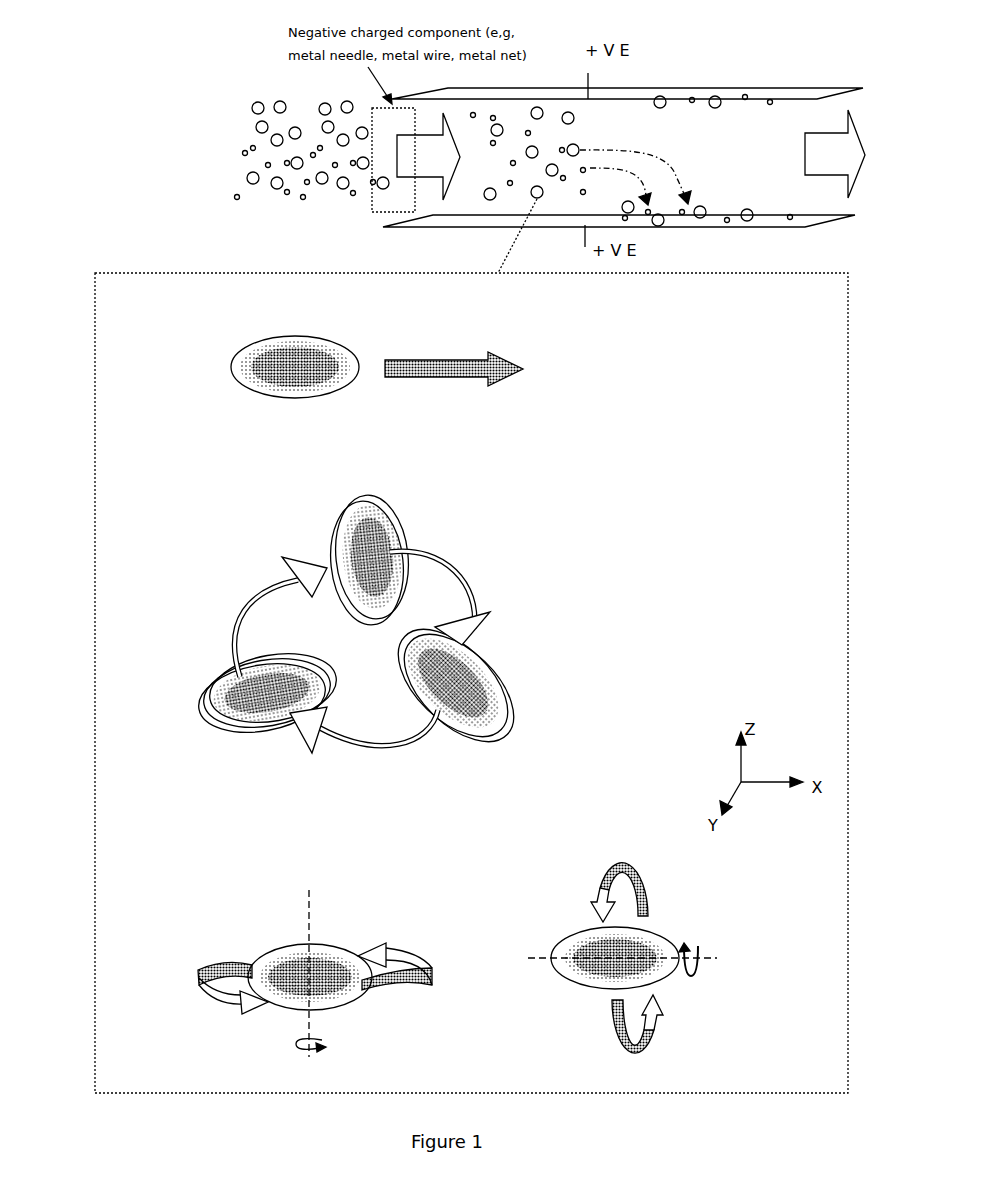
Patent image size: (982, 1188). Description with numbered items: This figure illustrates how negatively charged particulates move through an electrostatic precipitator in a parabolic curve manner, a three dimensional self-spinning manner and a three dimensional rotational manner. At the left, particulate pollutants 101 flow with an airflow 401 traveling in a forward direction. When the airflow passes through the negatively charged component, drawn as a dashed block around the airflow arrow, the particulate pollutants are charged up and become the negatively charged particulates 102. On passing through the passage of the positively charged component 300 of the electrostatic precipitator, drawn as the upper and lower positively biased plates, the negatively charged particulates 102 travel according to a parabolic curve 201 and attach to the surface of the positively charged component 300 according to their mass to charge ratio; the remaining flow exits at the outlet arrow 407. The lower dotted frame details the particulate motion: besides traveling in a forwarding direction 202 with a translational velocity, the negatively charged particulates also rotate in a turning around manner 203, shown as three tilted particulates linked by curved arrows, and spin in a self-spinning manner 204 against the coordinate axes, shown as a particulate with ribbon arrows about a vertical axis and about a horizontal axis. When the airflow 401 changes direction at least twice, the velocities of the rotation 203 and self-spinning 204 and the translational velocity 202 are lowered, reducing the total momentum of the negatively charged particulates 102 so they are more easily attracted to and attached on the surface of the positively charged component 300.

The particulate pollutants 101 is at (249, 139).
The positively charged component 300 is at (452, 223).
The airflow 401 is at (428, 156).
The negatively charged particulates 102 is at (428, 231).
The parabolic curve 201 is at (686, 209).
The particle flow direction arrow 407 is at (835, 154).
The forwarding direction 202 is at (460, 381).
The turning around manner 203 is at (432, 627).
The self-spinning manner 204 is at (457, 960).